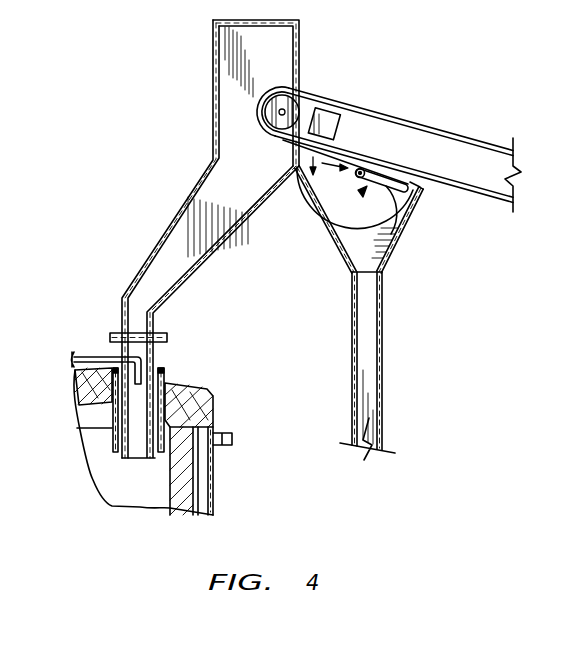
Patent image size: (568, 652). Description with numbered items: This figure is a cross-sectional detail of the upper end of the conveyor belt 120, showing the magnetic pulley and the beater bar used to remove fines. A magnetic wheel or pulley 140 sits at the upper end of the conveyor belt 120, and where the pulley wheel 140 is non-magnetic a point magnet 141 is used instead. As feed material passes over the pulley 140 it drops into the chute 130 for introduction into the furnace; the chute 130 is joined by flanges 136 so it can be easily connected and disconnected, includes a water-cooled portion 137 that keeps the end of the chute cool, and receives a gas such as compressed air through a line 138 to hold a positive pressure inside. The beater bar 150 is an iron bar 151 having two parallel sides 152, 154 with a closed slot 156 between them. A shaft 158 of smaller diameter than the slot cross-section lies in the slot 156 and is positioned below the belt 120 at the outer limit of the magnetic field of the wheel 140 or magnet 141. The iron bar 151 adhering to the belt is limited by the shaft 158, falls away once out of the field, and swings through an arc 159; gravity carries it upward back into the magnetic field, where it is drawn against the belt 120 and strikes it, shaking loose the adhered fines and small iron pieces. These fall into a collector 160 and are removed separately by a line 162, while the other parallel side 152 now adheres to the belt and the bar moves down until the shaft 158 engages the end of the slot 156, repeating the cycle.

The conveyor belt 120 is at (387, 114).
The chute 130 is at (180, 213).
The flanges 136 is at (168, 339).
The water-cooled portion 137 is at (166, 383).
The line 138 is at (89, 352).
The magnetic wheel or pulley 140 is at (283, 93).
The point magnet 141 is at (329, 112).
The beater bar 150 is at (322, 216).
The iron bar 151 is at (419, 192).
The parallel side 152 is at (395, 232).
The parallel side 154 is at (406, 169).
The closed slot 156 is at (375, 177).
The shaft 158 is at (359, 168).
The arc 159 is at (336, 238).
The collector 160 is at (388, 262).
The line 162 is at (366, 356).